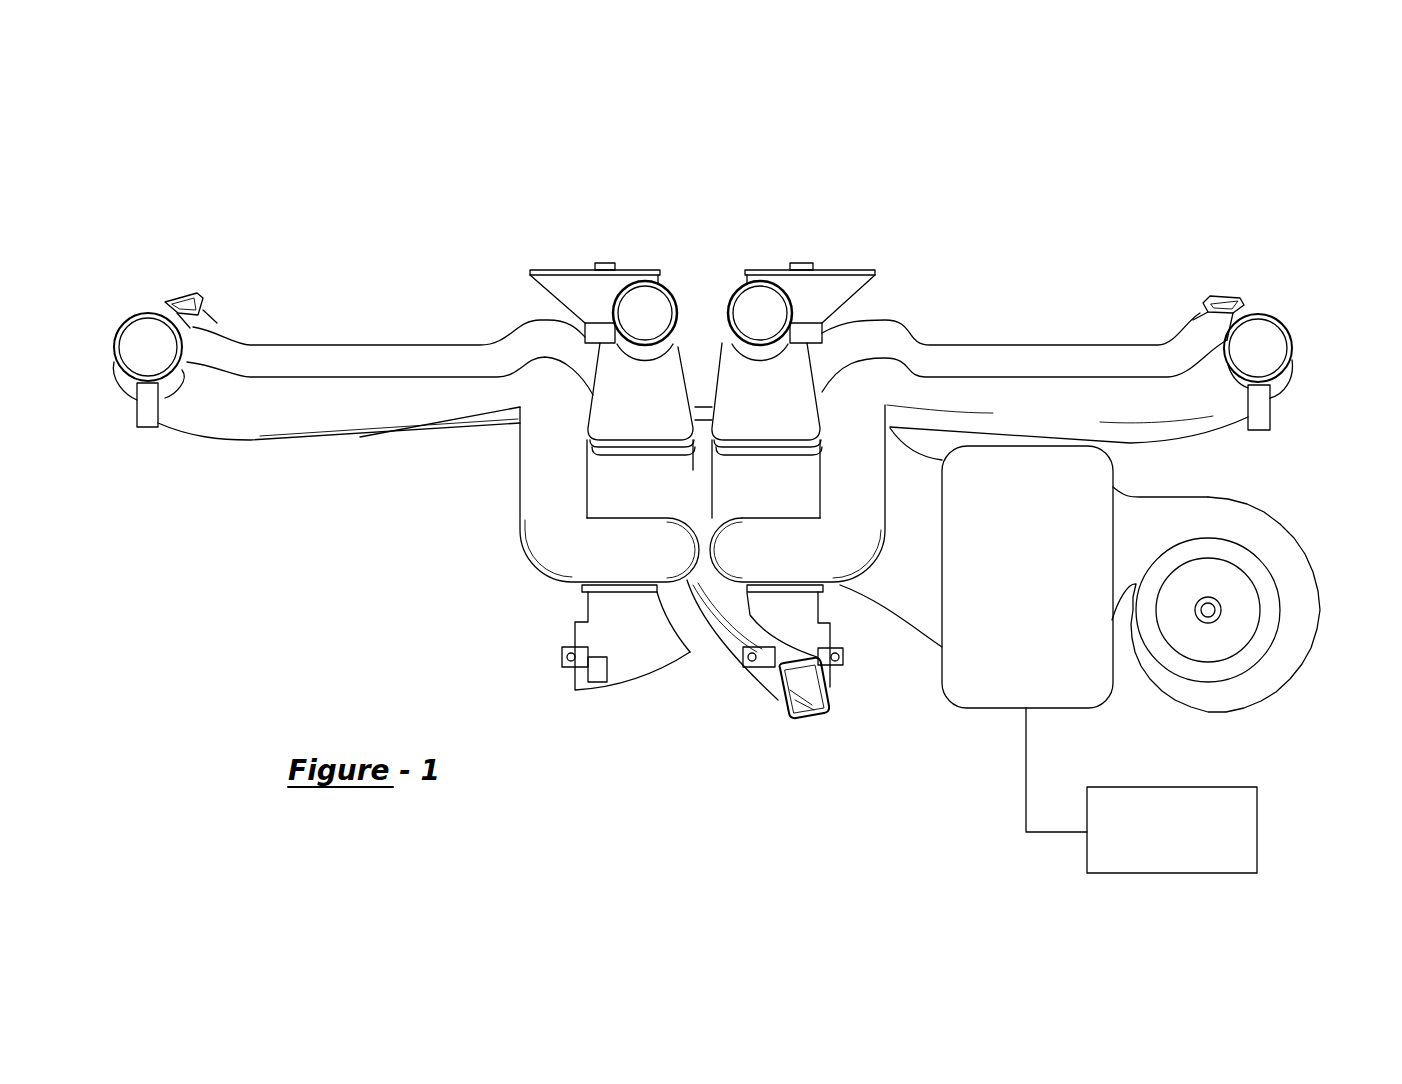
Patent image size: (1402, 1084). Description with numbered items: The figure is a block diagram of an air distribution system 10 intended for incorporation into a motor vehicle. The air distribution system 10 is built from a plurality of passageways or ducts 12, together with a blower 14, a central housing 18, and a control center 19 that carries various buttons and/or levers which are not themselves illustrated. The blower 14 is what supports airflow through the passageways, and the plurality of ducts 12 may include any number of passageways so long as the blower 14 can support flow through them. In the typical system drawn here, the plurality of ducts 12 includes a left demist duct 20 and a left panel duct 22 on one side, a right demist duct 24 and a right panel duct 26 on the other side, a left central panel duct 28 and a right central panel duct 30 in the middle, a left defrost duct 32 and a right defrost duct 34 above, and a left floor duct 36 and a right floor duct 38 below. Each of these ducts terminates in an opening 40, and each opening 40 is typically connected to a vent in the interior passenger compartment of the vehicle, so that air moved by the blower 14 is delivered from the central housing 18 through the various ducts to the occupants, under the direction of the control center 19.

The air distribution system 10 is at (940, 208).
The ducts 12 is at (479, 461).
The blower 14 is at (1282, 548).
The central housing 18 is at (967, 683).
The control center 19 is at (1245, 849).
The left demist duct 20 is at (312, 345).
The left panel duct 22 is at (302, 432).
The right demist duct 24 is at (1105, 345).
The right panel duct 26 is at (1175, 435).
The left central panel duct 28 is at (692, 337).
The right central panel duct 30 is at (717, 337).
The left defrost duct 32 is at (573, 280).
The right defrost duct 34 is at (862, 272).
The left floor duct 36 is at (635, 670).
The right floor duct 38 is at (732, 667).
The opening 40 is at (185, 298).